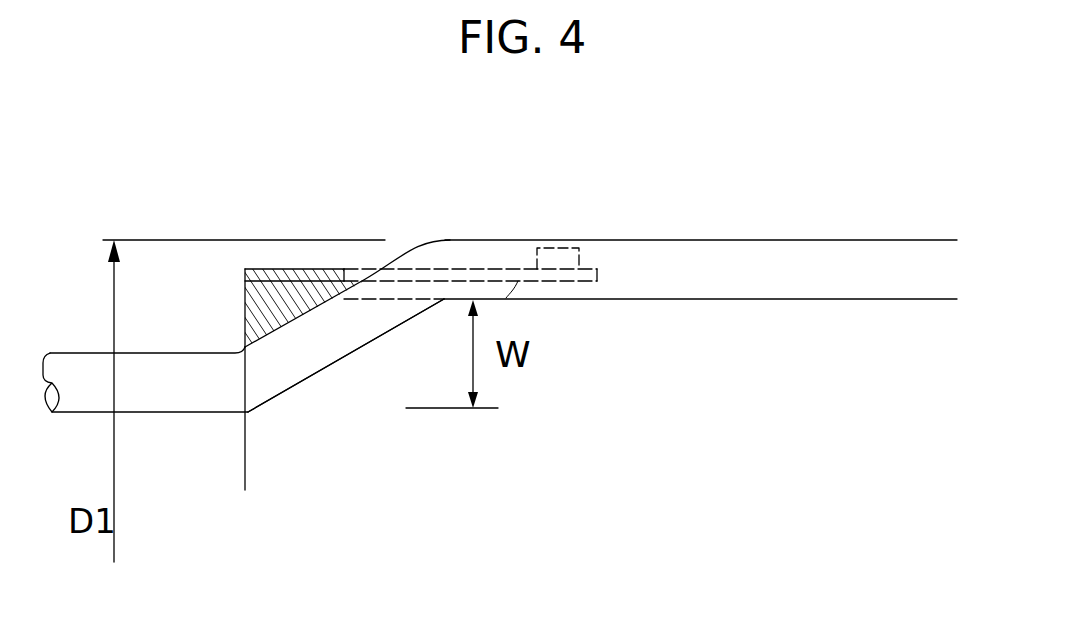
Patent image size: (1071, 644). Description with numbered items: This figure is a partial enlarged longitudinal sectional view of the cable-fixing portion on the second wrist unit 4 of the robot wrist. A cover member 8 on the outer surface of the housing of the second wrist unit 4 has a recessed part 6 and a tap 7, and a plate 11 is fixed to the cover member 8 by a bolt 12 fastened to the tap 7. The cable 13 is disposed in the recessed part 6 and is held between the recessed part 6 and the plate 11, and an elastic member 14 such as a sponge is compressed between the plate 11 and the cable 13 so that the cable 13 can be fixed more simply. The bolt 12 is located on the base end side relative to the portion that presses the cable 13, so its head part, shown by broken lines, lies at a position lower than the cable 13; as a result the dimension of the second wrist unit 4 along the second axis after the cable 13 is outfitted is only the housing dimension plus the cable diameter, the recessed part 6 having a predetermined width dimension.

The second wrist unit 4 is at (738, 282).
The recessed part 6 is at (305, 376).
The tap 7 is at (608, 298).
The cover member 8 is at (832, 298).
The plate 11 is at (291, 268).
The bolt 12 is at (553, 246).
The cable 13 is at (70, 352).
The elastic member 14 is at (245, 298).